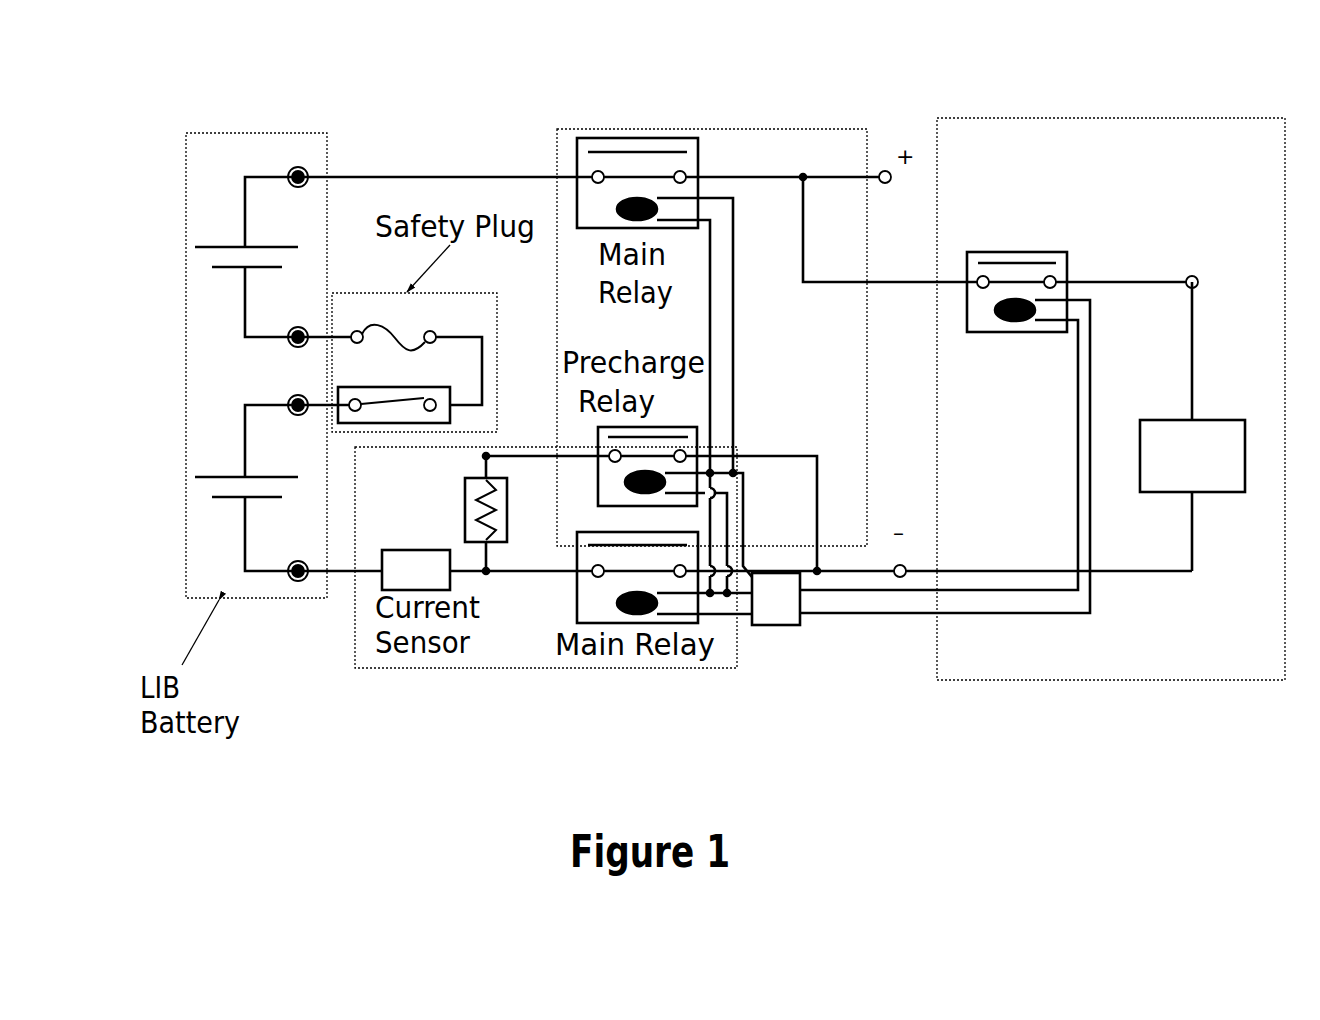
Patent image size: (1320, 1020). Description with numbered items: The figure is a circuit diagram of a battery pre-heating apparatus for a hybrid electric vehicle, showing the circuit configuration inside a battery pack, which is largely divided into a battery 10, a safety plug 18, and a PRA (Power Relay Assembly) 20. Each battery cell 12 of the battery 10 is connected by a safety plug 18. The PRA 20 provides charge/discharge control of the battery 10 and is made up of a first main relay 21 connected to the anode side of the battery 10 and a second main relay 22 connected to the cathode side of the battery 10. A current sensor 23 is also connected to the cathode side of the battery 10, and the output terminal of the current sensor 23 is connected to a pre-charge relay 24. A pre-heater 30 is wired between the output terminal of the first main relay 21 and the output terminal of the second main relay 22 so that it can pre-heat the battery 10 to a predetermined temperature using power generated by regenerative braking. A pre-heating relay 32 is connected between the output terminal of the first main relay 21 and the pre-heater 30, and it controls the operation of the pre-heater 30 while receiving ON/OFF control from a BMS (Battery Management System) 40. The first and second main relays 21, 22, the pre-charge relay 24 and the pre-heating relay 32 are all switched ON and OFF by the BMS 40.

The battery 10 is at (278, 598).
The battery cell 12 is at (228, 498).
The safety plug 18 is at (362, 293).
The PRA (Power Relay Assembly) 20 is at (787, 128).
The first main relay 21 is at (630, 137).
The second main relay 22 is at (577, 600).
The current sensor 23 is at (358, 592).
The pre-charge relay 24 is at (668, 427).
The pre-heater 30 is at (1218, 495).
The pre-heating relay 32 is at (1020, 335).
The BMS (Battery Management System) 40 is at (775, 630).